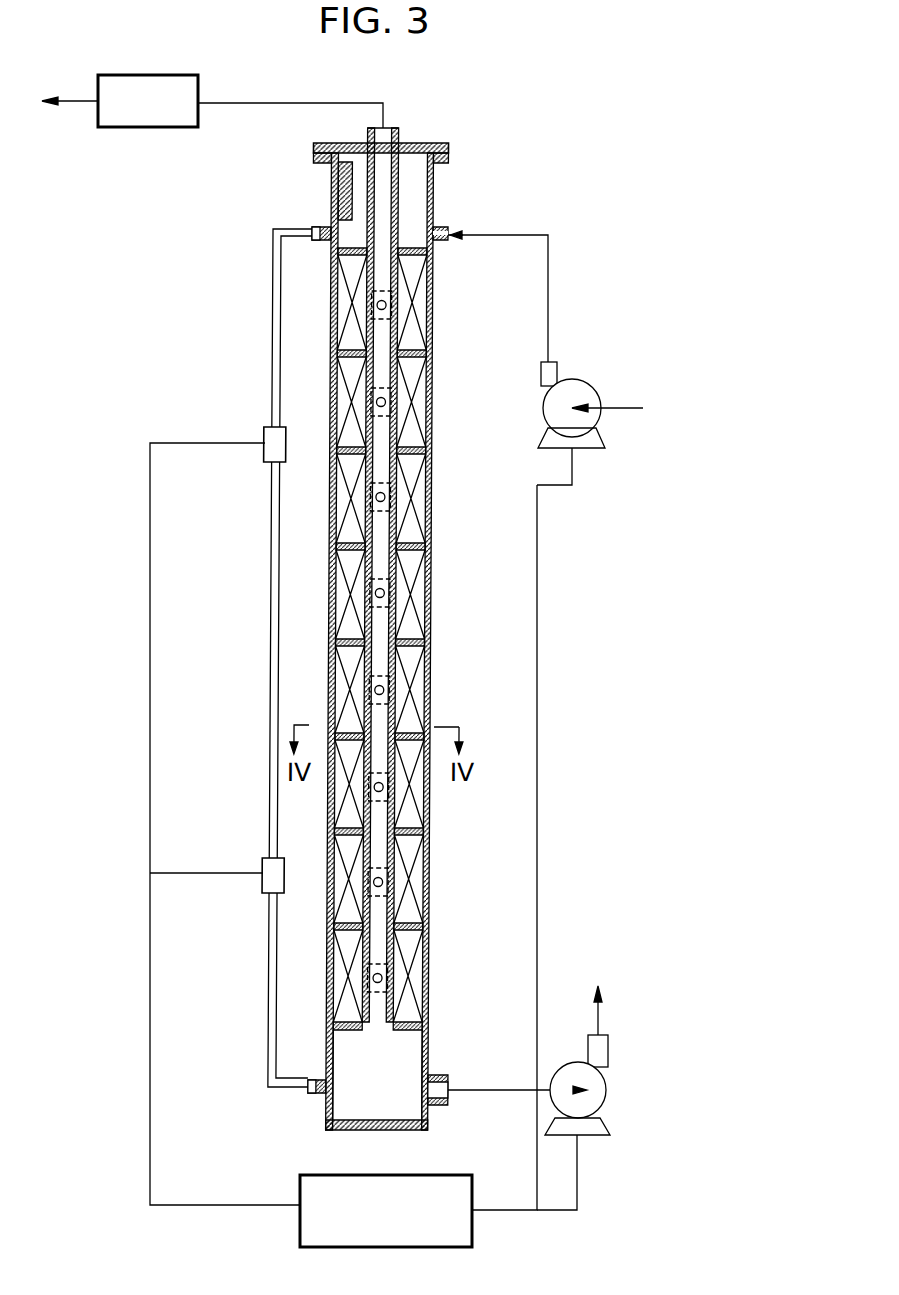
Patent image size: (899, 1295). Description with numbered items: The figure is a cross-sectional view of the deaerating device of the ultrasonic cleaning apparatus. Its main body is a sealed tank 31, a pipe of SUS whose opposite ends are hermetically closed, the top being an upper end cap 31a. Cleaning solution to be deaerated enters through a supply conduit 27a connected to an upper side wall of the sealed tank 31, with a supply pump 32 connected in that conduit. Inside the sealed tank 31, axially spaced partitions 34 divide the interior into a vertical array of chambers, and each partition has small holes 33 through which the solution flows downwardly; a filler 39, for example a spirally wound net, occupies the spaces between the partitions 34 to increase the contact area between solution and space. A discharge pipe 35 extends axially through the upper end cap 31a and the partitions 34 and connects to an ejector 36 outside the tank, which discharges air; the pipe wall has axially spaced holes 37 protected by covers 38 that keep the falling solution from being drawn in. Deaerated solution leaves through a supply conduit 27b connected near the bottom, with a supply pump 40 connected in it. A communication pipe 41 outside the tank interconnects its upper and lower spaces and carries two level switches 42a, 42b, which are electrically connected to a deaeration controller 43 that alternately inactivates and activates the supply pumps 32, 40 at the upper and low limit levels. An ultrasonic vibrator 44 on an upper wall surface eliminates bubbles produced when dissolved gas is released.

The supply conduit 27a is at (510, 235).
The supply conduit 27b is at (489, 1090).
The sealed tank 31 is at (445, 660).
The upper end cap 31a is at (421, 143).
The supply pump 32 is at (592, 440).
The small holes 33 is at (433, 368).
The partitions 34 is at (418, 270).
The discharge pipe 35 is at (399, 187).
The ejector 36 is at (158, 128).
The holes 37 is at (390, 493).
The covers 38 is at (402, 519).
The filler 39 is at (415, 690).
The supply pump 40 is at (593, 1124).
The communication pipe 41 is at (271, 678).
The level switch 42a is at (268, 450).
The level switch 42b is at (270, 880).
The deaeration controller 43 is at (472, 1236).
The ultrasonic vibrator 44 is at (350, 165).